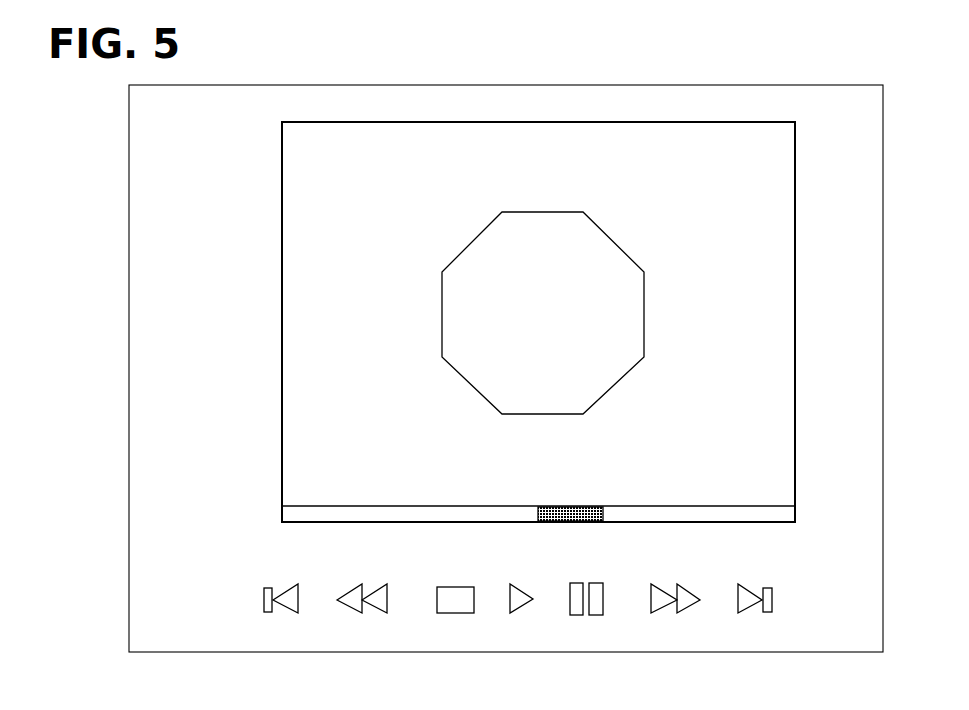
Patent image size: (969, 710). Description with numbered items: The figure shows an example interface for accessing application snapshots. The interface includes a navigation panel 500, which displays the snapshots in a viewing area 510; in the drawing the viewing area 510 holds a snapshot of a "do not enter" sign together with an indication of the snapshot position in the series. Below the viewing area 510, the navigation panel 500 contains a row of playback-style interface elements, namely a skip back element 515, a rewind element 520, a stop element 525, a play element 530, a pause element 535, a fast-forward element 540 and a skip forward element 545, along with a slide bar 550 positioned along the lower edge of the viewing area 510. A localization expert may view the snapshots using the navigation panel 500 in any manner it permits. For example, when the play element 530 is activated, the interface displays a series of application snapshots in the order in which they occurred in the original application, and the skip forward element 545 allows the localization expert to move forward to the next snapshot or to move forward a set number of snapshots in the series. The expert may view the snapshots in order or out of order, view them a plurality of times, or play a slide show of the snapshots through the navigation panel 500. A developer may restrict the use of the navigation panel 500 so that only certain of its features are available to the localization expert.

The navigation panel 500 is at (169, 442).
The viewing area 510 is at (329, 280).
The skip back interface element 515 is at (290, 600).
The rewind interface element 520 is at (377, 597).
The stop interface element 525 is at (457, 598).
The play interface element 530 is at (510, 600).
The pause interface element 535 is at (588, 597).
The fast-forward interface element 540 is at (683, 603).
The skip forward interface element 545 is at (760, 597).
The slide bar interface element 550 is at (603, 512).